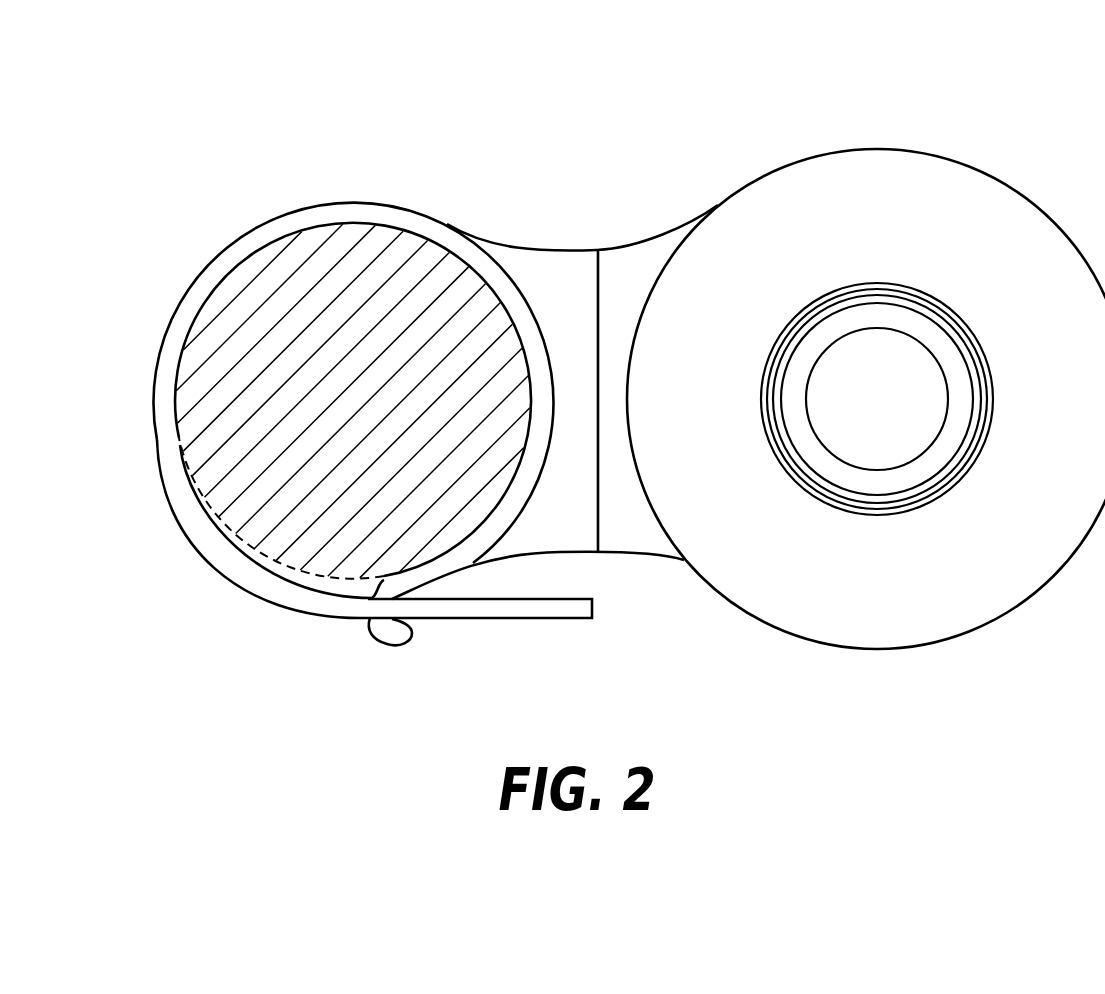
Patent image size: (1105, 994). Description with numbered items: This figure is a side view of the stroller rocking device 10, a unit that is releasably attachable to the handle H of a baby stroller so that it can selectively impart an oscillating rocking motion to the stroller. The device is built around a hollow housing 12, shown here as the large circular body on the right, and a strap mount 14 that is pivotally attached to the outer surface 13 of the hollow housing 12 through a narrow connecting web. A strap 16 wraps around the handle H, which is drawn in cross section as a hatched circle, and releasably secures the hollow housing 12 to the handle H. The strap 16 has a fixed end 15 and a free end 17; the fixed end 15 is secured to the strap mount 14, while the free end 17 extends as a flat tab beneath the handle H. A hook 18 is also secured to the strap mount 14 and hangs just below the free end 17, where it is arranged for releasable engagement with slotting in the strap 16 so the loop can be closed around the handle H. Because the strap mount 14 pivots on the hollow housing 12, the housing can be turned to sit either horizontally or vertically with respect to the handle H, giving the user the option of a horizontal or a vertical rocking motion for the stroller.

The stroller rocking device 10 is at (922, 100).
The hollow housing 12 is at (803, 641).
The outer surface 13 is at (782, 190).
The strap mount 14 is at (552, 272).
The fixed end 15 is at (442, 237).
The strap 16 is at (303, 203).
The handle H is at (372, 245).
The free end 17 is at (530, 619).
The hook 18 is at (390, 647).